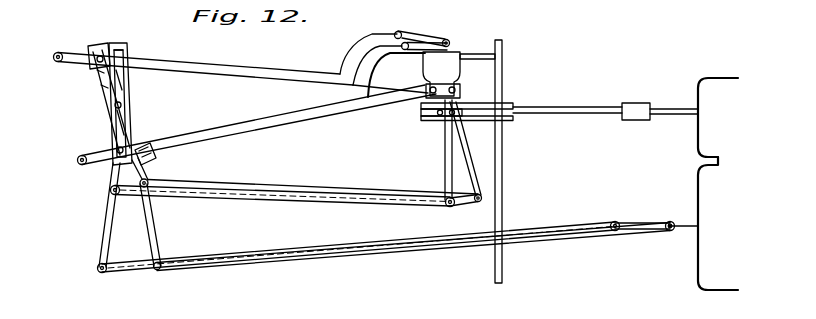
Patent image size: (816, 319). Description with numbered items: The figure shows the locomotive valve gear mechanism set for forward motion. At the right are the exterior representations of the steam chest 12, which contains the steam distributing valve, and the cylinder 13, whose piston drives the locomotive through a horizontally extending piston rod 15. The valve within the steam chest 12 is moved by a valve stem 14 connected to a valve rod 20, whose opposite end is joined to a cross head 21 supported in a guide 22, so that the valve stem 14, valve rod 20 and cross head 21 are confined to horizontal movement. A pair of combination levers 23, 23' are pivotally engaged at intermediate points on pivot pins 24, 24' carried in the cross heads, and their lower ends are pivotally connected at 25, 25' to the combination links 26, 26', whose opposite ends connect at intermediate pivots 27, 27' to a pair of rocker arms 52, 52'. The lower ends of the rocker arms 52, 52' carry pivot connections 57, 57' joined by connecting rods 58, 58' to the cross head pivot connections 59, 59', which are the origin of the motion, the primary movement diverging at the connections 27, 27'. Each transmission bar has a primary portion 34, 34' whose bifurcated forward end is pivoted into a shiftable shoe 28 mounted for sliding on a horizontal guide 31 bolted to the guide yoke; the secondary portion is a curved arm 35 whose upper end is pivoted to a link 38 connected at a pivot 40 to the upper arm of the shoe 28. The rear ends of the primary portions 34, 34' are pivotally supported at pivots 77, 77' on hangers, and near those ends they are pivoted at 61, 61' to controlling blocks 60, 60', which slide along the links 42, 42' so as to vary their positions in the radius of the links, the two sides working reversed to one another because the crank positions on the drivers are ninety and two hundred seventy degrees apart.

The steam chest 12 is at (718, 117).
The cylinder 13 is at (718, 223).
The valve stem 14 is at (660, 111).
The piston rod 15 is at (672, 232).
The valve rod 20 is at (590, 106).
The cross head 21 is at (463, 101).
The guide 22 is at (482, 120).
The combination lever 23 is at (428, 150).
The combination lever 23' is at (495, 149).
The pivot pin 24 is at (458, 85).
The pivot pin 24' is at (428, 130).
The pivotal connection 25 is at (437, 214).
The pivotal connection 25' is at (469, 212).
The combination link 26 is at (282, 209).
The combination link 26' is at (313, 178).
The pivotal connection 27 is at (94, 190).
The pivotal connection 27' is at (161, 172).
The shiftable shoe 28 is at (460, 57).
The guide 31 is at (503, 57).
The primary portion of transmission bar 34 is at (259, 125).
The primary portion of transmission bar 34' is at (243, 72).
The curved arm 35 is at (352, 84).
The link 38 is at (442, 38).
The pivotal connection 40 is at (452, 42).
The link 42 is at (133, 104).
The link 42' is at (86, 43).
The rocker arm 52 is at (91, 215).
The rocker arm 52' is at (167, 225).
The pivot connection 57 is at (94, 284).
The pivot connection 57' is at (159, 284).
The connecting rod 58 is at (358, 243).
The connecting rod 58' is at (413, 247).
The pivot connection 59 is at (637, 210).
The pivot connection 59' is at (669, 212).
The controlling block 60 is at (142, 133).
The controlling block 60' is at (95, 102).
The pivotal connection 61 is at (99, 136).
The pivotal connection 61' is at (124, 33).
The pivot 77 is at (67, 153).
The pivot 77' is at (39, 70).